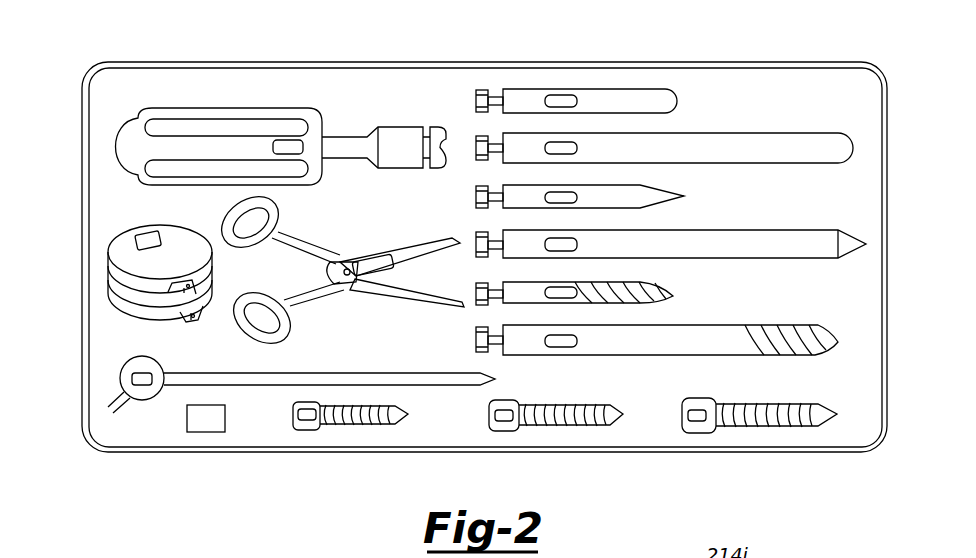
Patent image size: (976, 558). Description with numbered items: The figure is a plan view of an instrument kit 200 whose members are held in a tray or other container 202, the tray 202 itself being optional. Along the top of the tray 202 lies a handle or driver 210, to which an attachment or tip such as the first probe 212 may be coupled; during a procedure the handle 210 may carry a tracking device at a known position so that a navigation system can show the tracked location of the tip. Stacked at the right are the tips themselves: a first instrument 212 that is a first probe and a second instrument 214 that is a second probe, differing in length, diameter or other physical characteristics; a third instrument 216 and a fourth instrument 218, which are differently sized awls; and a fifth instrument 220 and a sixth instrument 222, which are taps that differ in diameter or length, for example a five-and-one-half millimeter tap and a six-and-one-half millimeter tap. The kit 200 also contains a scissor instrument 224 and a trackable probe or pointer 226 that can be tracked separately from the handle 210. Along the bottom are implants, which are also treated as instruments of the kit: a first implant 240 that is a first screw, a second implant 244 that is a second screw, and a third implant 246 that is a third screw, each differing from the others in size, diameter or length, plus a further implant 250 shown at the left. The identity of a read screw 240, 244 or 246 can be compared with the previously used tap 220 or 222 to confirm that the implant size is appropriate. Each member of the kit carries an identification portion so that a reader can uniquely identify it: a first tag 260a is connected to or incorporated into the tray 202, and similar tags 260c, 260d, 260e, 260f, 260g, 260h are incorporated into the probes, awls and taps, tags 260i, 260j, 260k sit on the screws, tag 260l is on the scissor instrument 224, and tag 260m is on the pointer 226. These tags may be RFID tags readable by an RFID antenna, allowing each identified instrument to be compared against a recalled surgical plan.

The instrument kit 200 is at (485, 258).
The tray 202 is at (858, 62).
The handle 210 is at (281, 107).
The first instrument 212 is at (634, 75).
The second instrument 214 is at (700, 138).
The third instrument 216 is at (625, 185).
The fourth instrument 218 is at (676, 218).
The fifth instrument 220 is at (623, 282).
The sixth instrument 222 is at (675, 327).
The scissor instrument 224 is at (338, 270).
The trackable probe 226 is at (259, 372).
The first implant 240 is at (345, 455).
The second implant 244 is at (552, 454).
The third implant 246 is at (753, 453).
The implant 250 is at (124, 257).
The first tag 260a is at (207, 432).
The indicator tag 260c is at (580, 103).
The indicator tag 260d is at (580, 148).
The indicator tag 260e is at (580, 198).
The indicator tag 260f is at (580, 245).
The indicator tag 260g is at (580, 293).
The indicator tag 260h is at (580, 341).
The indicator tag 260i is at (306, 431).
The indicator tag 260j is at (504, 432).
The indicator tag 260k is at (696, 433).
The indicator tag 260l is at (392, 266).
The indicator tag 260m is at (135, 380).